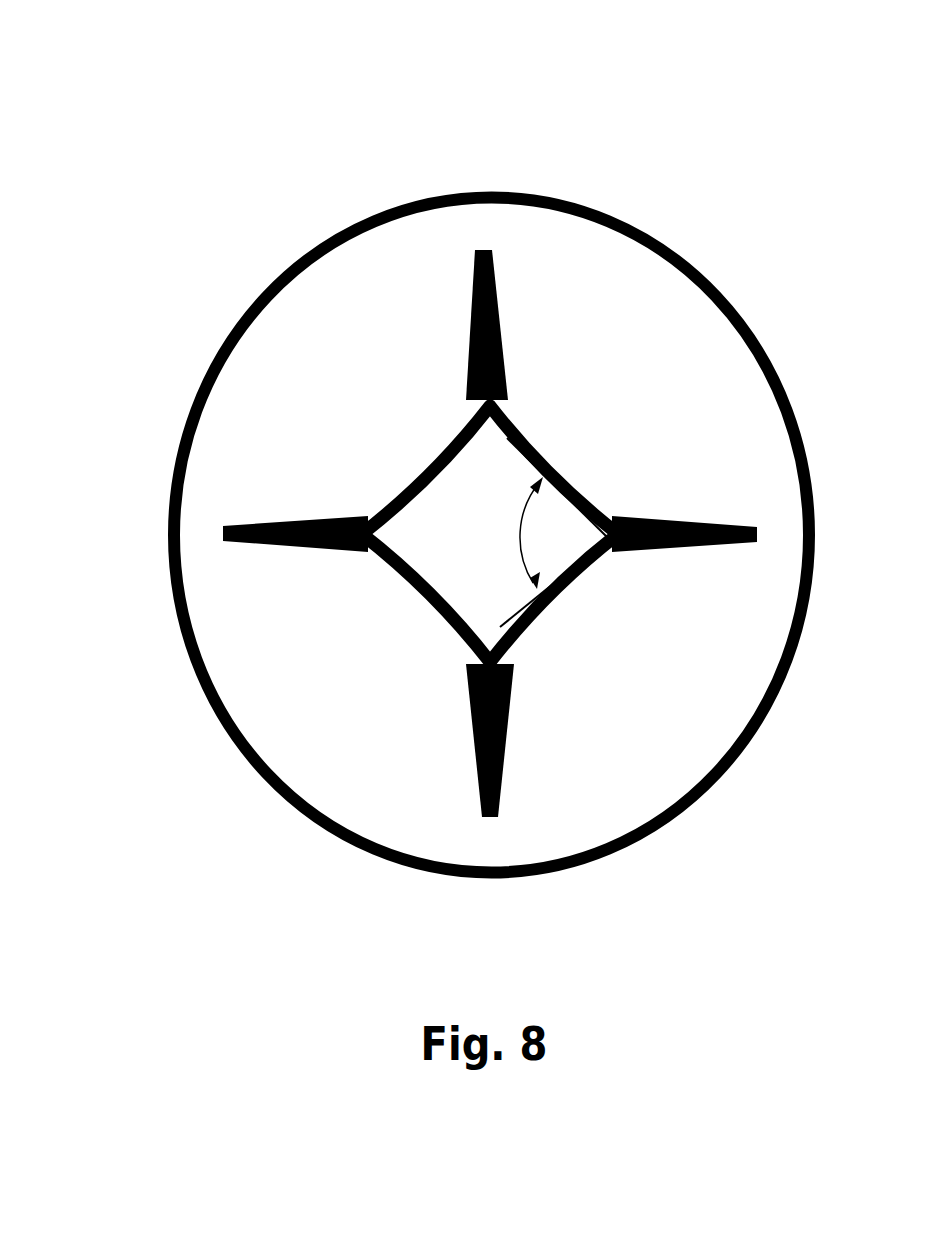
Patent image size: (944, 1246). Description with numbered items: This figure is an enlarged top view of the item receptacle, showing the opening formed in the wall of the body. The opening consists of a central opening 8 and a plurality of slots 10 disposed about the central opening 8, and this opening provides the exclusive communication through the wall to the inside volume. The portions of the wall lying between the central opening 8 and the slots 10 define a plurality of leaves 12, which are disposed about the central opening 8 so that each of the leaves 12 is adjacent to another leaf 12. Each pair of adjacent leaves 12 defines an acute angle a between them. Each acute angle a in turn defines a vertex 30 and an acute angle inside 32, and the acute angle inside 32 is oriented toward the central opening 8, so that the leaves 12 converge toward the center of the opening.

The central opening 8 is at (445, 512).
The slots 10 is at (473, 312).
The leaves 12 is at (560, 345).
The vertex 30 is at (617, 513).
The acute angle inside 32 is at (555, 532).
The acute angle a is at (520, 535).